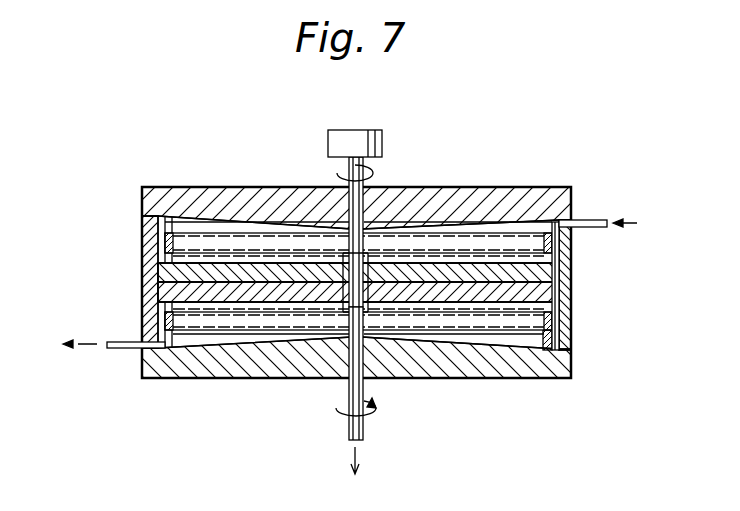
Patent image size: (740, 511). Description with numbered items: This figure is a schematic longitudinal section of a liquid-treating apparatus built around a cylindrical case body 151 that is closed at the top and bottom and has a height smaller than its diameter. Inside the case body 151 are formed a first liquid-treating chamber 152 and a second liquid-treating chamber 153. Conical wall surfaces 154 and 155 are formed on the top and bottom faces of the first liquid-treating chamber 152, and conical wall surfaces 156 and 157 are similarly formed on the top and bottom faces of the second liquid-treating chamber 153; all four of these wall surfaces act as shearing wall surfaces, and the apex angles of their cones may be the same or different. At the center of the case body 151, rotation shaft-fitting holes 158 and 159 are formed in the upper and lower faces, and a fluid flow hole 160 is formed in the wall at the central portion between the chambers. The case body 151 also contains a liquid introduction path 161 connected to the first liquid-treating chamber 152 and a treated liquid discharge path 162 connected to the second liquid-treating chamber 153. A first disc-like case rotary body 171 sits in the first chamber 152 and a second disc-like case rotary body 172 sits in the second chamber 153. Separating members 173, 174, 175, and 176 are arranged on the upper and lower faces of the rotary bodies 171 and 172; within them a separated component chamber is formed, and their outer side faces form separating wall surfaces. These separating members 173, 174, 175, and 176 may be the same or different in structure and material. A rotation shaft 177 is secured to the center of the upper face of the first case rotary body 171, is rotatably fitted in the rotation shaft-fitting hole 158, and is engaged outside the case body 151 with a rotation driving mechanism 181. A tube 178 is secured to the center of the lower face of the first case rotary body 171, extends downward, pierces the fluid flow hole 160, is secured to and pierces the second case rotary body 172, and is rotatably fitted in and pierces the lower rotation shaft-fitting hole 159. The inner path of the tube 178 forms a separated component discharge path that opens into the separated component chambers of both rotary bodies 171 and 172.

The case body 151 is at (572, 198).
The first liquid-treating chamber 152 is at (572, 266).
The second liquid-treating chamber 153 is at (546, 340).
The conical wall surface 154 is at (158, 226).
The conical wall surface 155 is at (158, 272).
The conical wall surface 156 is at (157, 302).
The conical wall surface 157 is at (192, 342).
The rotation shaft-fitting hole 158 is at (363, 208).
The rotation shaft-fitting hole 159 is at (345, 357).
The fluid flow hole 160 is at (572, 303).
The liquid introduction path 161 is at (594, 230).
The treated liquid discharge path 162 is at (125, 341).
The first disc-like case rotary body 171 is at (232, 243).
The second disc-like case rotary body 172 is at (247, 320).
The separating member 173 is at (512, 236).
The separating member 174 is at (474, 258).
The separating member 175 is at (495, 332).
The separating member 176 is at (472, 338).
The rotation shaft 177 is at (338, 170).
The tube 178 is at (364, 430).
The rotation driving mechanism 181 is at (360, 140).